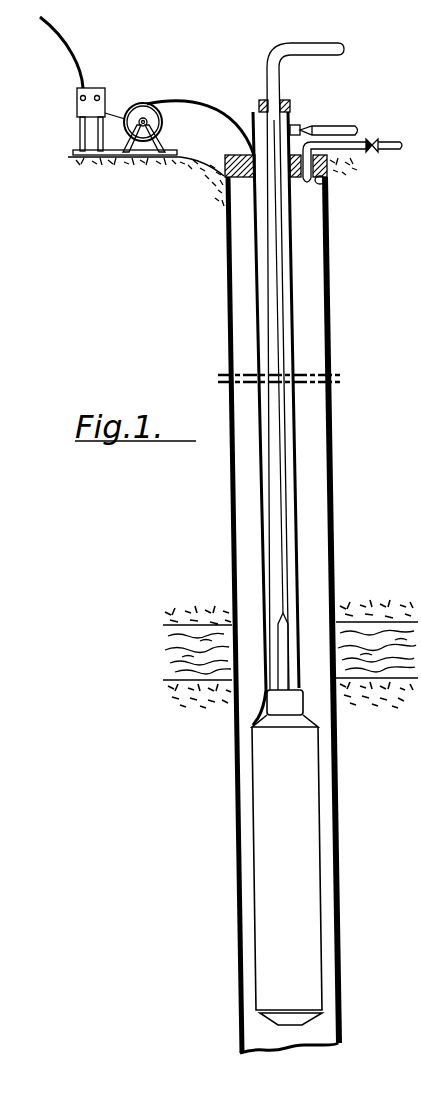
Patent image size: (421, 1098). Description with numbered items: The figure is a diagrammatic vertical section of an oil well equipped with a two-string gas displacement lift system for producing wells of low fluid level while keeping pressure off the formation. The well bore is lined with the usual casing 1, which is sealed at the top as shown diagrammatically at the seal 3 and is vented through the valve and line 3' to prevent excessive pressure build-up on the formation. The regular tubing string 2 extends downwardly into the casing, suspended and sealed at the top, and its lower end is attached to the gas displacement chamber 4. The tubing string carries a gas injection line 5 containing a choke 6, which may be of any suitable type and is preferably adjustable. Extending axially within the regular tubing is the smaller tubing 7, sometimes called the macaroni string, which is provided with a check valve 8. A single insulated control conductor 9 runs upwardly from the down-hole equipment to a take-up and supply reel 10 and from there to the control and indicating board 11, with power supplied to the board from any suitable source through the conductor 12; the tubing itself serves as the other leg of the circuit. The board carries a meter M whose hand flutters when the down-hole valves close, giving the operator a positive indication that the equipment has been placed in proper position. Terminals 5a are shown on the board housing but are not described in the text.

The casing 1 is at (229, 503).
The regular tubing string 2 is at (293, 332).
The casing top seal 3 is at (336, 164).
The vent valve and line 3' is at (386, 129).
The gas displacement chamber 4 is at (266, 825).
The gas injection line 5 is at (350, 126).
The terminals 5a is at (106, 98).
The choke 6 is at (300, 127).
The smaller tubing 7 is at (279, 285).
The check valve 8 is at (283, 614).
The insulated control conductor 9 is at (262, 561).
The take-up and supply reel 10 is at (143, 102).
The control and indicating board 11 is at (100, 89).
The conductor 12 is at (68, 44).
The meter M is at (76, 99).